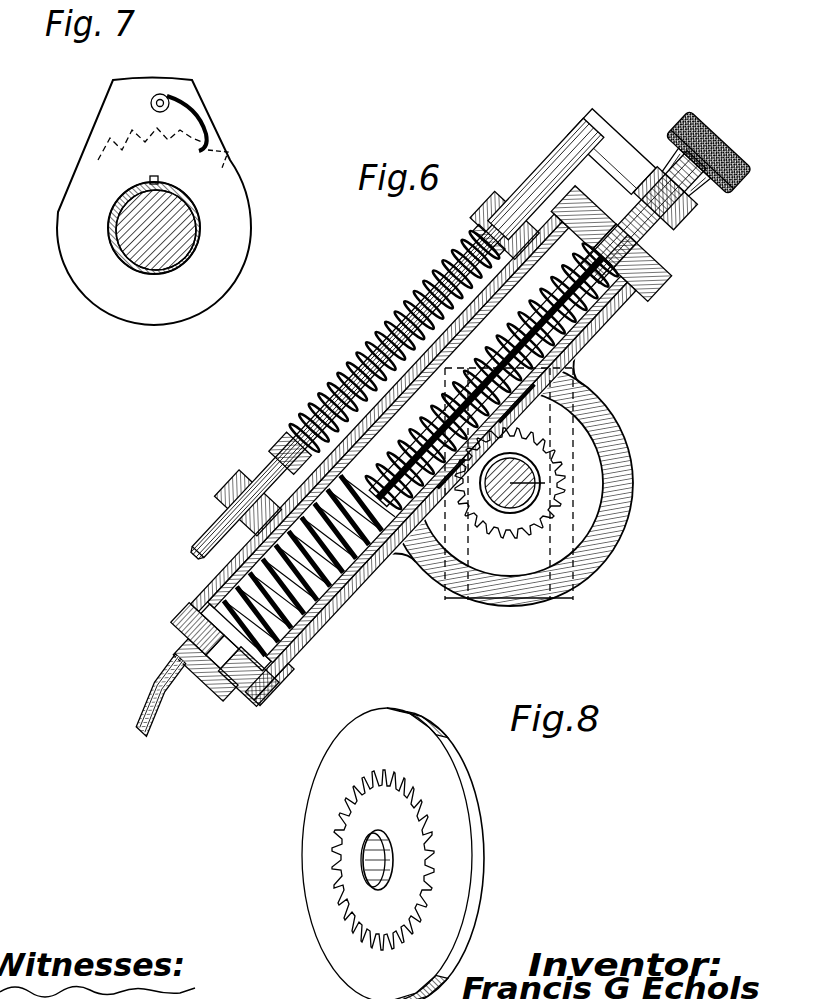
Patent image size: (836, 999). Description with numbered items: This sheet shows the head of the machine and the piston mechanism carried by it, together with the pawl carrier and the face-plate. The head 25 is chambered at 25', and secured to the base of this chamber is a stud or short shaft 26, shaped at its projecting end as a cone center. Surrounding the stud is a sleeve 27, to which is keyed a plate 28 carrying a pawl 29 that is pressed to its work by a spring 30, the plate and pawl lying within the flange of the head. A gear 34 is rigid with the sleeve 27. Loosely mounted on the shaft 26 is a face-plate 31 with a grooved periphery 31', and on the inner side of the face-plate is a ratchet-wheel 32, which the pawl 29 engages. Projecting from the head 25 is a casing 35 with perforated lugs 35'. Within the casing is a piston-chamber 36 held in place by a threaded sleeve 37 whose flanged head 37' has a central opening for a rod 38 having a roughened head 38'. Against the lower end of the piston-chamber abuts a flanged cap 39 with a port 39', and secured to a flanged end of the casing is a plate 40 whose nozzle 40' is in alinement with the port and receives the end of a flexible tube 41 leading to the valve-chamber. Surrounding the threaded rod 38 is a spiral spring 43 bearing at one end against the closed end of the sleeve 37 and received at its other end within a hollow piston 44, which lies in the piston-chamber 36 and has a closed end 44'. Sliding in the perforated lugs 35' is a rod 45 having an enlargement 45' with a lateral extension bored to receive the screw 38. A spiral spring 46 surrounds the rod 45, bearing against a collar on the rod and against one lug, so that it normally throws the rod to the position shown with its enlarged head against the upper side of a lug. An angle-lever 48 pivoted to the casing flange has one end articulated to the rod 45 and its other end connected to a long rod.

In FIG. 6, the head 25 is at (523, 481).
In FIG. 6, the chamber of head 25' is at (509, 484).
In FIG. 7, the stud or short shaft 26 is at (165, 260).
In FIG. 6, the stud or short shaft 26 is at (500, 510).
In FIG. 7, the sleeve 27 is at (197, 224).
In FIG. 6, the sleeve 27 is at (530, 465).
In FIG. 7, the plate 28 is at (154, 202).
In FIG. 7, the pawl 29 is at (184, 115).
In FIG. 7, the spring 30 is at (215, 118).
In FIG. 8, the face-plate 31 is at (387, 853).
In FIG. 8, the grooved periphery 31' is at (455, 853).
In FIG. 8, the ratchet-wheel 32 is at (383, 860).
In FIG. 6, the gear 34 is at (556, 487).
In FIG. 6, the casing 35 is at (429, 412).
In FIG. 6, the perforated lugs 35' is at (366, 354).
In FIG. 6, the piston-chamber 36 is at (420, 315).
In FIG. 6, the threaded sleeve 37 is at (648, 271).
In FIG. 6, the flanged head 37' is at (583, 212).
In FIG. 6, the rod 38 is at (643, 217).
In FIG. 6, the roughened head 38' is at (708, 144).
In FIG. 6, the flanged cap 39 is at (218, 627).
In FIG. 6, the port 39' is at (248, 690).
In FIG. 6, the plate 40 is at (179, 620).
In FIG. 6, the nozzle 40' is at (186, 670).
In FIG. 6, the flexible tube 41 is at (186, 712).
In FIG. 6, the spiral spring 43 is at (582, 362).
In FIG. 6, the hollow piston 44 is at (440, 491).
In FIG. 6, the closed end 44' is at (292, 684).
In FIG. 6, the rod 45 is at (350, 389).
In FIG. 6, the enlargement 45' is at (546, 178).
In FIG. 6, the spiral spring 46 is at (386, 340).
In FIG. 6, the angle-lever 48 is at (490, 378).